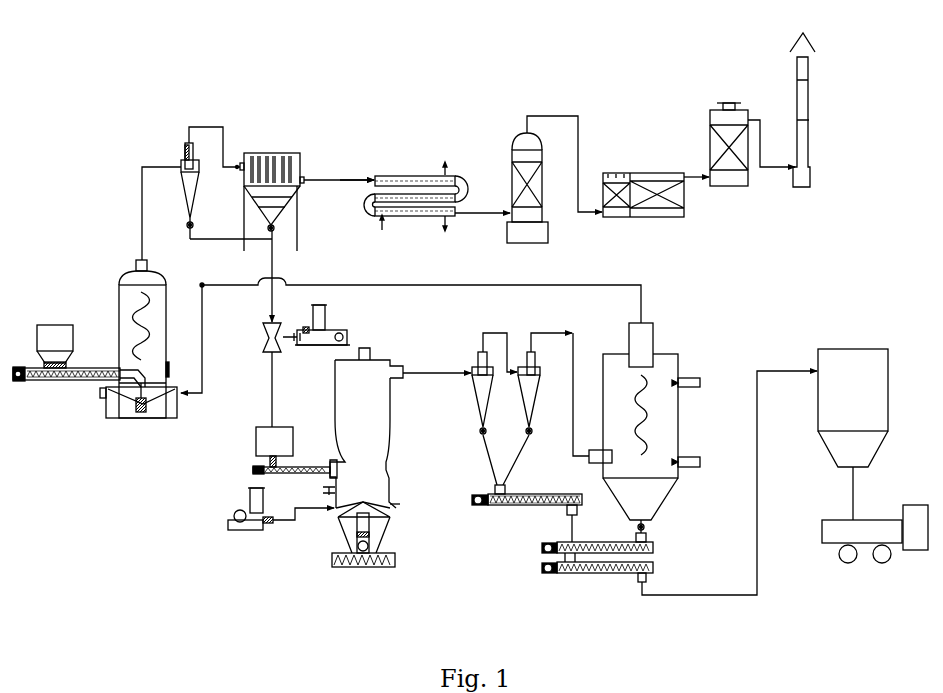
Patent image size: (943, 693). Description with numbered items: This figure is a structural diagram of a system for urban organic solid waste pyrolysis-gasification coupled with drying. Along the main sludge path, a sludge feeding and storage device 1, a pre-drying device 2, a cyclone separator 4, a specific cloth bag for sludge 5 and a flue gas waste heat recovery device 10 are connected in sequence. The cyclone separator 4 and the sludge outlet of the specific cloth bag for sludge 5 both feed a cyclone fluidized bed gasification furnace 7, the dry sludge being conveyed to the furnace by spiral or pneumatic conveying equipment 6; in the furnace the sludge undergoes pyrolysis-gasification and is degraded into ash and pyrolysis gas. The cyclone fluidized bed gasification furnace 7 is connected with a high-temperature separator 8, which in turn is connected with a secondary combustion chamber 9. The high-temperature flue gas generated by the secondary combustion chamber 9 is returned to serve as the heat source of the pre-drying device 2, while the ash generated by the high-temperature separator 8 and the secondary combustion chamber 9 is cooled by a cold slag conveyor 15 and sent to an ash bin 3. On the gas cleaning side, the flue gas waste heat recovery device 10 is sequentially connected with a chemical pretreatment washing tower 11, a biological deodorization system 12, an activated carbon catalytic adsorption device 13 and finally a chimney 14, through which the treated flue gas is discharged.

The sludge feeding and storage device 1 is at (63, 338).
The pre-drying device 2 is at (127, 315).
The ash bin 3 is at (852, 348).
The cyclone separator 4 is at (186, 139).
The specific cloth bag for sludge 5 is at (273, 153).
The spiral or pneumatic conveying equipment 6 is at (346, 330).
The cyclone fluidized bed gasification furnace 7 is at (380, 360).
The high-temperature separator 8 is at (475, 366).
The secondary combustion chamber 9 is at (667, 354).
The flue gas waste heat recovery device 10 is at (405, 176).
The chemical pretreatment washing tower 11 is at (528, 134).
The biological deodorization system 12 is at (658, 173).
The activated carbon catalytic adsorption device 13 is at (728, 103).
The chimney 14 is at (795, 100).
The cold slag conveyor 15 is at (553, 492).